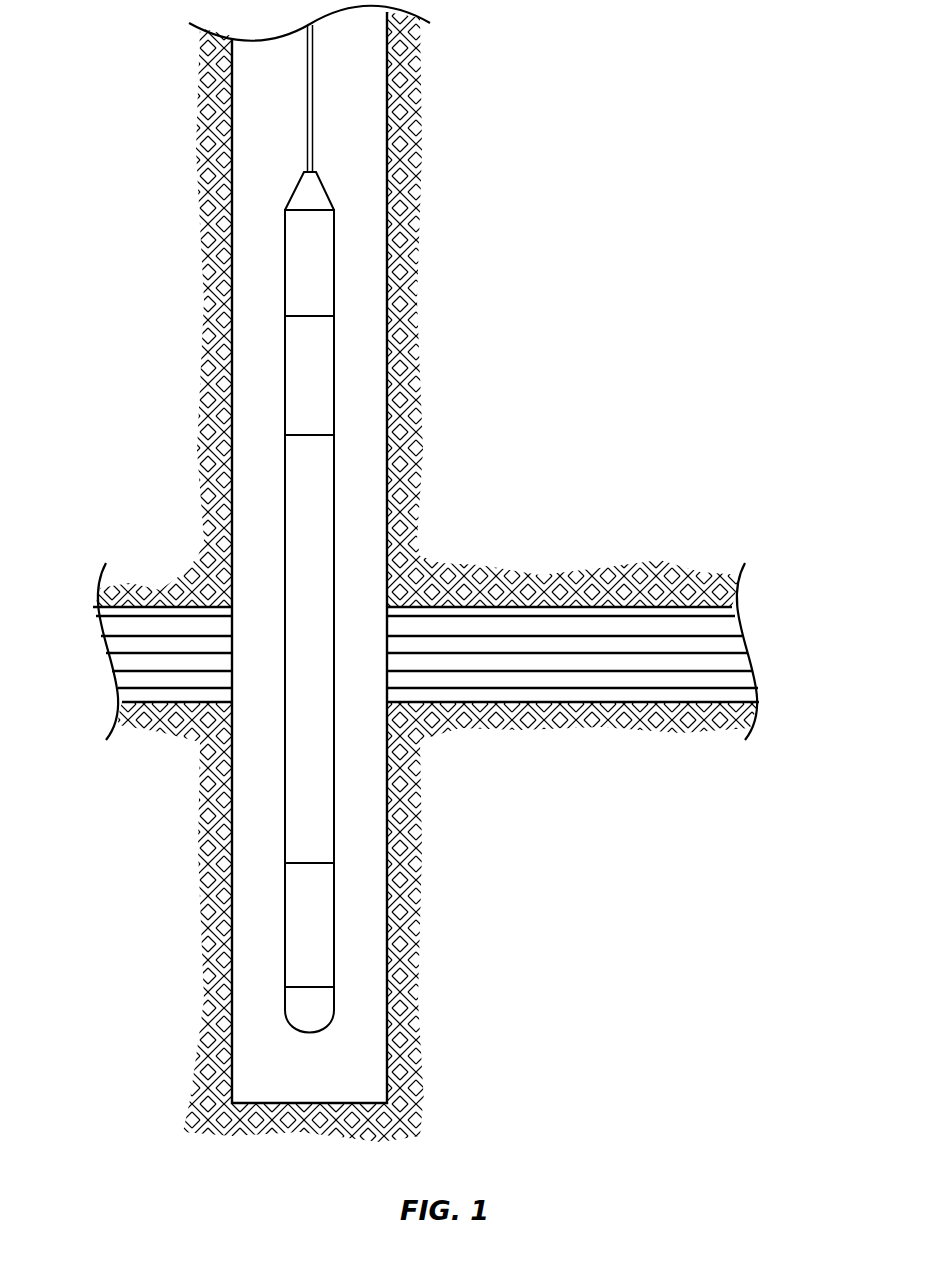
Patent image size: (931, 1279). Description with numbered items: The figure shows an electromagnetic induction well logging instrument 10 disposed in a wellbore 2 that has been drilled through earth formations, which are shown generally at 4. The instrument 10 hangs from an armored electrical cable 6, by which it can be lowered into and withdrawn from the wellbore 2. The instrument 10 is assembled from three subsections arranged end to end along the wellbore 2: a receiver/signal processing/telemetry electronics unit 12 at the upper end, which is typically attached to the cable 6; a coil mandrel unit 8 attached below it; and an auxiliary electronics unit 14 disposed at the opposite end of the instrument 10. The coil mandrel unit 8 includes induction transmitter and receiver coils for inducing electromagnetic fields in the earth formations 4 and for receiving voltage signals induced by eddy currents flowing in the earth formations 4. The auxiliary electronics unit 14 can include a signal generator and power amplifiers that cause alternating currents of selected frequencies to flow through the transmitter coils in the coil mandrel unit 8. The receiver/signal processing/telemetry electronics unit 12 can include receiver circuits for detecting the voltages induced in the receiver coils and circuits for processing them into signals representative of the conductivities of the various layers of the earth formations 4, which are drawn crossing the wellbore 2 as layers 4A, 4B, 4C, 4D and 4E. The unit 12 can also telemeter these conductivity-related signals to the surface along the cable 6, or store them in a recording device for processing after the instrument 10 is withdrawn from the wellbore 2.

The wellbore 2 is at (365, 133).
The earth formations 4 is at (436, 651).
The layer of the earth formations 4A is at (727, 610).
The layer of the earth formations 4B is at (730, 627).
The layer of the earth formations 4C is at (740, 662).
The layer of the earth formations 4D is at (745, 677).
The layer of the earth formations 4E is at (750, 696).
The armored electrical cable 6 is at (307, 108).
The coil mandrel unit 8 is at (298, 612).
The electromagnetic induction well logging instrument 10 is at (355, 602).
The receiver/signal processing/telemetry electronics unit 12 is at (298, 368).
The auxiliary electronics unit 14 is at (298, 930).